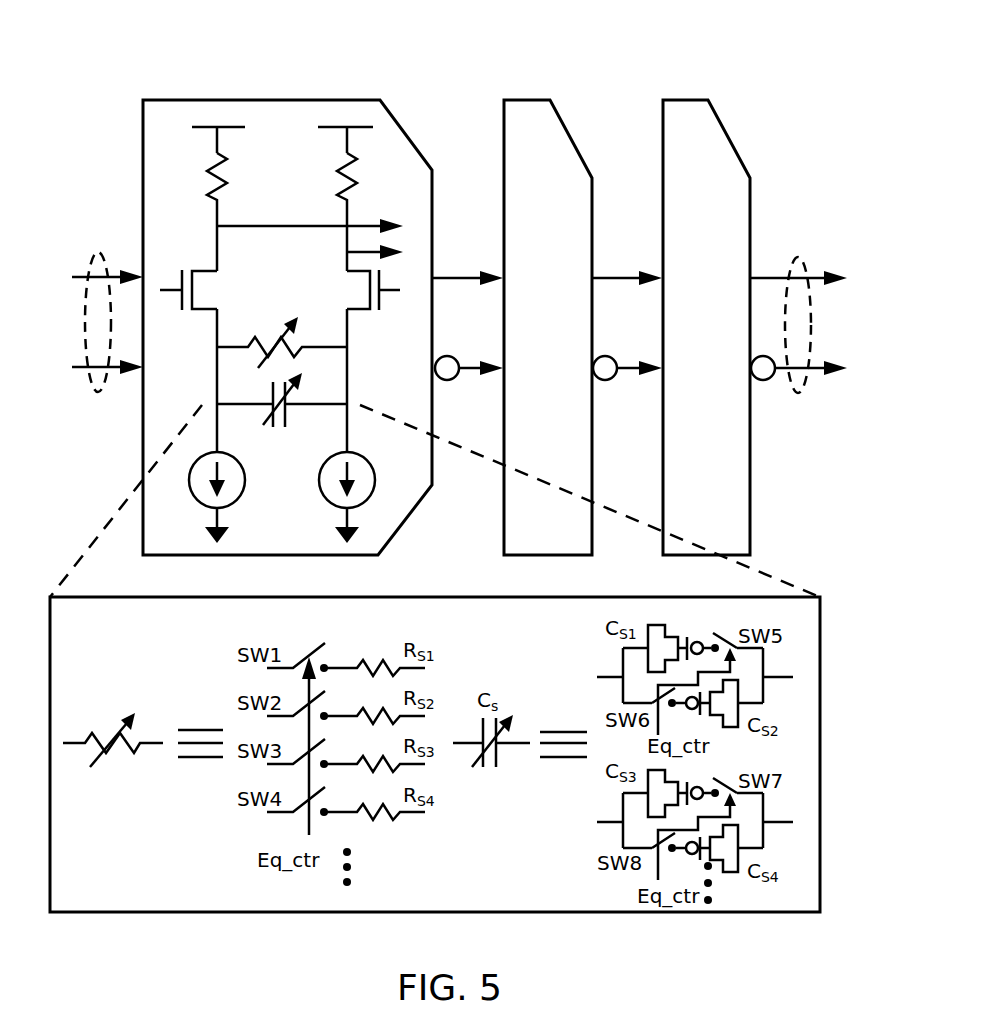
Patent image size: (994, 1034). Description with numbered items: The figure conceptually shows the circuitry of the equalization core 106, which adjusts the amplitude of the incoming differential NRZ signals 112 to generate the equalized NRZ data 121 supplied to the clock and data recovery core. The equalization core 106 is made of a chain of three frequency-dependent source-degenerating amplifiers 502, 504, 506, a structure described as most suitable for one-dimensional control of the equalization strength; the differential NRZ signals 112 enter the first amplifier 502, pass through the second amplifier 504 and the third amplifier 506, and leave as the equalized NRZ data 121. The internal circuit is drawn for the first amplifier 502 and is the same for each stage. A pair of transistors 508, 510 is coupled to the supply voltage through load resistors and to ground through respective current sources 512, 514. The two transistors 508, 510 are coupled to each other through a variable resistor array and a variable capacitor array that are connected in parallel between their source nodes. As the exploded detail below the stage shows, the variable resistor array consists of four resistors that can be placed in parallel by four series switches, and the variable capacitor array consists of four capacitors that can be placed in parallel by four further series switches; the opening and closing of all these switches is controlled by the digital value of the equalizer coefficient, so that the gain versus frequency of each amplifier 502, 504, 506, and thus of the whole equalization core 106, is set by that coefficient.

The equalization core 106 is at (440, 45).
The differential NRZ signals 112 is at (92, 258).
The equalized NRZ data 121 is at (797, 257).
The frequency-dependent source-degenerating amplifier 502 is at (253, 100).
The frequency-dependent source-degenerating amplifier 504 is at (527, 100).
The frequency-dependent source-degenerating amplifier 506 is at (685, 100).
The transistor 508 is at (200, 268).
The transistor 510 is at (382, 280).
The current source 512 is at (242, 497).
The current source 514 is at (374, 470).